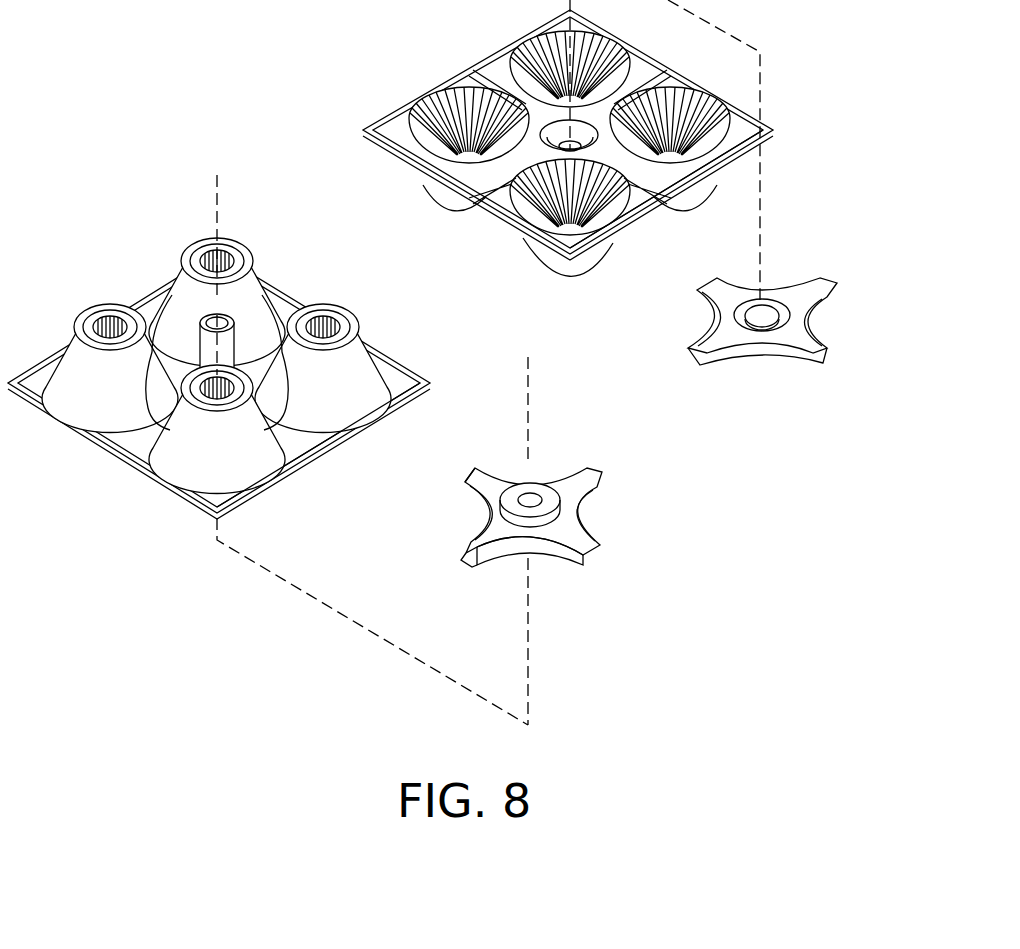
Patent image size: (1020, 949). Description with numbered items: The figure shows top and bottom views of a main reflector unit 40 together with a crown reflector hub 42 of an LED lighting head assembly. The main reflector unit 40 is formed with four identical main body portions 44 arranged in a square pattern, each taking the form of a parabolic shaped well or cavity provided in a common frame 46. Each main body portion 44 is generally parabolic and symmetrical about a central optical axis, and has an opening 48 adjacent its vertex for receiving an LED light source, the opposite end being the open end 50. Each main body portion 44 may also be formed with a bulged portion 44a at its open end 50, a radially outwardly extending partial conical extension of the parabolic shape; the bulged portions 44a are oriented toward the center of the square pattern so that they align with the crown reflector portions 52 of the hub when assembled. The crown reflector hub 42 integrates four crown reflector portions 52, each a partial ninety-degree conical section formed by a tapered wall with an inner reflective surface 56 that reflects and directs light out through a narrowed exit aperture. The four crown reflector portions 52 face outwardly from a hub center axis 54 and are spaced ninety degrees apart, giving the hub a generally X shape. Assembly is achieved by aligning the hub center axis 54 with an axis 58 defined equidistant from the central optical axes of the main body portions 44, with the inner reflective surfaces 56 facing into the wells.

The main reflector unit 40 is at (476, 63).
The crown reflector hub 42 is at (800, 292).
The main body portion 44 is at (381, 262).
The bulged portion 44a is at (452, 100).
The common frame 46 is at (412, 377).
The opening 48 is at (212, 372).
The open end 50 is at (733, 101).
The crown reflector portion 52 is at (478, 511).
The hub center axis 54 is at (532, 393).
The inner reflective surface 56 is at (462, 556).
The axis 58 is at (221, 197).